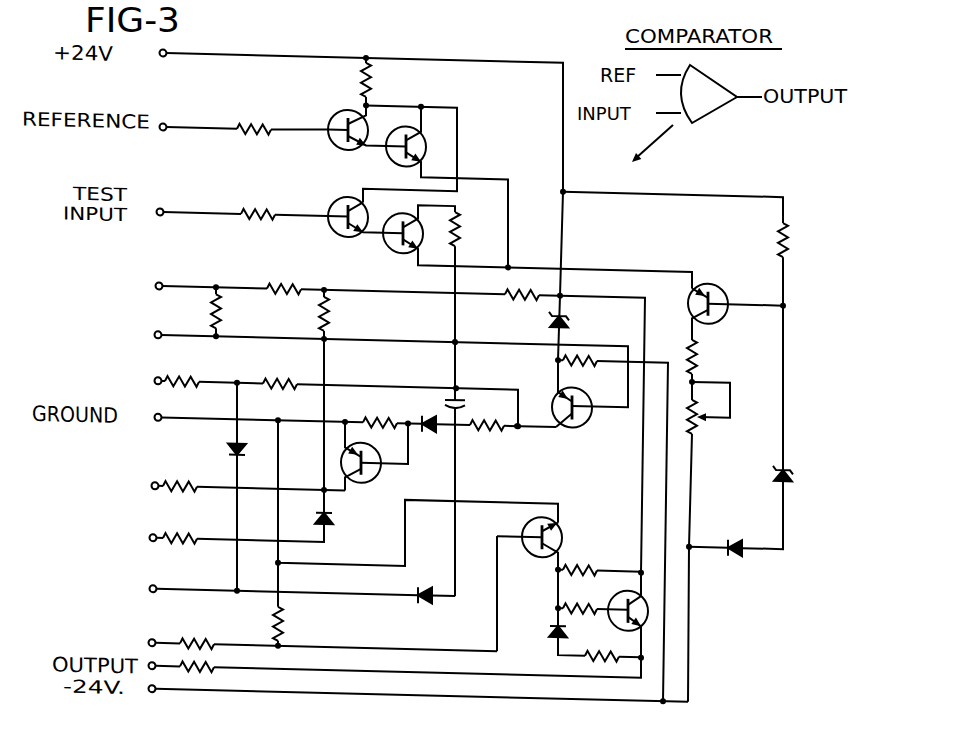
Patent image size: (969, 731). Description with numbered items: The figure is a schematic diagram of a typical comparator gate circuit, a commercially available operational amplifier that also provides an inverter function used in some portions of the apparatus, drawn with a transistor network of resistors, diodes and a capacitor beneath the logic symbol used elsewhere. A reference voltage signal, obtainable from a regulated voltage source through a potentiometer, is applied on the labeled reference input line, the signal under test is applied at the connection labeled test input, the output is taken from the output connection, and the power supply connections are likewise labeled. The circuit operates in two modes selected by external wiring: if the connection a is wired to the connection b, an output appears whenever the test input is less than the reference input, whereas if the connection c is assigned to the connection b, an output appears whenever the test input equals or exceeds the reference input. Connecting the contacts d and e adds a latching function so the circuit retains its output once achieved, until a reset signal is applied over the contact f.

The connection a is at (233, 485).
The connection b is at (310, 640).
The connection c is at (321, 398).
The contact d is at (375, 363).
The contact e is at (159, 536).
The contact f is at (289, 588).